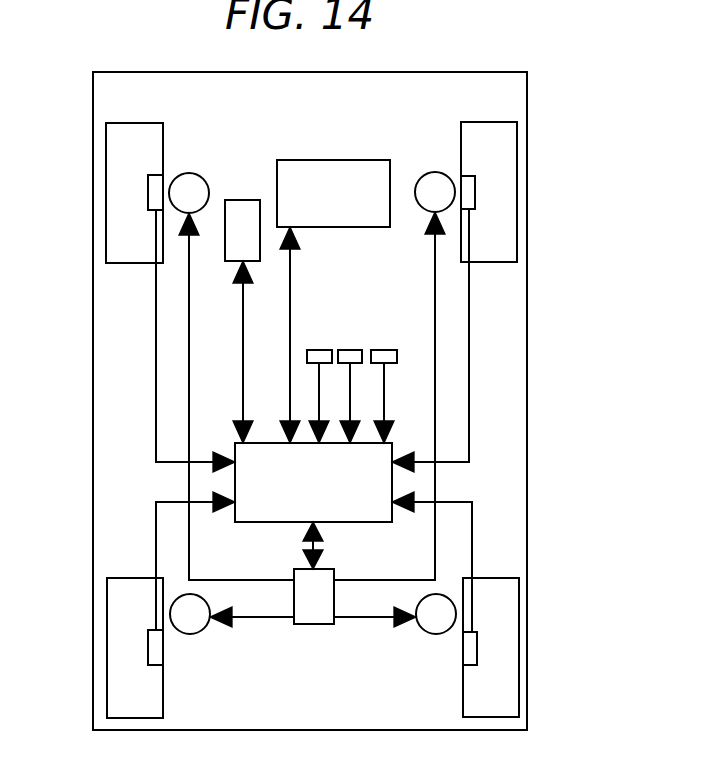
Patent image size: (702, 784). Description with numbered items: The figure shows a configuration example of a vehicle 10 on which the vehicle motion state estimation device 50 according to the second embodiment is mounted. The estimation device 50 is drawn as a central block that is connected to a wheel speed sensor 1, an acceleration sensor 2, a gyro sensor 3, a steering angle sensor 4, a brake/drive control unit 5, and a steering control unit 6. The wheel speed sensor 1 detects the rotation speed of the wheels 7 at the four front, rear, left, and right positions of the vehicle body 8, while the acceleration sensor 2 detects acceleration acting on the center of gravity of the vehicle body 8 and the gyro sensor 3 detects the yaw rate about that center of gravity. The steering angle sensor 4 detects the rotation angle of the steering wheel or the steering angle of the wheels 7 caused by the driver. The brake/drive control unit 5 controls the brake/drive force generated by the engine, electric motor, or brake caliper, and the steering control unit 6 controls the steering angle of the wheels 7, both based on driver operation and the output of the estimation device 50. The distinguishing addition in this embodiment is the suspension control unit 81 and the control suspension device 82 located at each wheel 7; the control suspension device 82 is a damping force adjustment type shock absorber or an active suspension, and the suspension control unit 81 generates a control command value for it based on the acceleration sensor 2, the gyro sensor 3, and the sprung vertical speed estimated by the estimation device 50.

The wheel speed sensor 1 is at (148, 178).
The acceleration sensor 2 is at (318, 350).
The gyro sensor 3 is at (348, 350).
The steering angle sensor 4 is at (380, 350).
The brake/drive control unit 5 is at (322, 160).
The steering control unit 6 is at (243, 200).
The wheel 7 is at (107, 222).
The vehicle body 8 is at (528, 432).
The vehicle 10 is at (540, 345).
The vehicle motion state estimation device 50 is at (392, 478).
The suspension control unit 81 is at (313, 625).
The control suspension device 82 is at (189, 173).